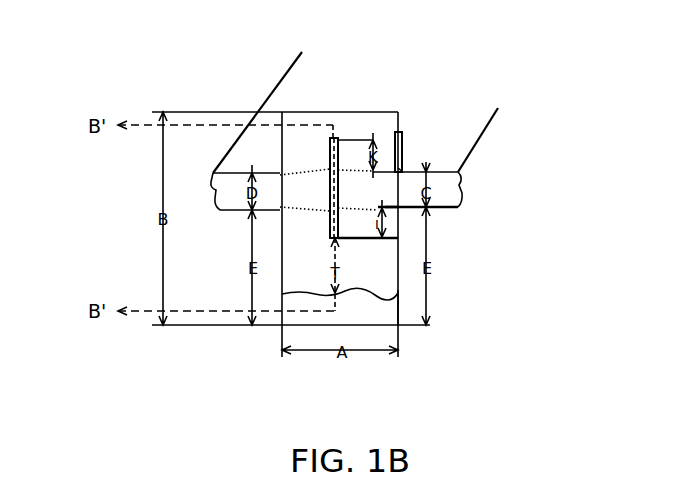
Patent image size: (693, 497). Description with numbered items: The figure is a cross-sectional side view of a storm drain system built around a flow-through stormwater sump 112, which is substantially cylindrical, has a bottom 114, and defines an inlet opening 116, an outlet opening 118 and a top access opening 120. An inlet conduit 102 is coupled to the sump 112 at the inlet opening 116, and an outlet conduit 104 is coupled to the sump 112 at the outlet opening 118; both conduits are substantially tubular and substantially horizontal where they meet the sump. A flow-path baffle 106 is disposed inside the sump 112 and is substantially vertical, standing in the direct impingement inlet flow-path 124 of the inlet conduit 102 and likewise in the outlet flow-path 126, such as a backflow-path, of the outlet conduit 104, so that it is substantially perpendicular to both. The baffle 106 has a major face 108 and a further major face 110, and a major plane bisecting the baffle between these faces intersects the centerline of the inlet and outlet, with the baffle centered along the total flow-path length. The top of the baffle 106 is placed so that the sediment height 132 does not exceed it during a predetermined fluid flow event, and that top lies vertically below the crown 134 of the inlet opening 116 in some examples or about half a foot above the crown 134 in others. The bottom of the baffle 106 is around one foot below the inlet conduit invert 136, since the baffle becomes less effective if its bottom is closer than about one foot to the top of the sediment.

The inlet conduit 102 is at (498, 108).
The outlet conduit 104 is at (302, 52).
The flow-path baffle 106 is at (338, 240).
The major face 108 is at (328, 155).
The further major face 110 is at (352, 148).
The flow-through stormwater sump 112 is at (399, 131).
The bottom 114 is at (313, 323).
The inlet opening 116 is at (403, 172).
The outlet opening 118 is at (279, 198).
The top access opening 120 is at (338, 111).
The inlet flow-path 124 is at (355, 196).
The outlet flow-path 126 is at (311, 197).
The sediment height 132 is at (390, 297).
The crown 134 is at (396, 134).
The inlet conduit invert 136 is at (393, 229).